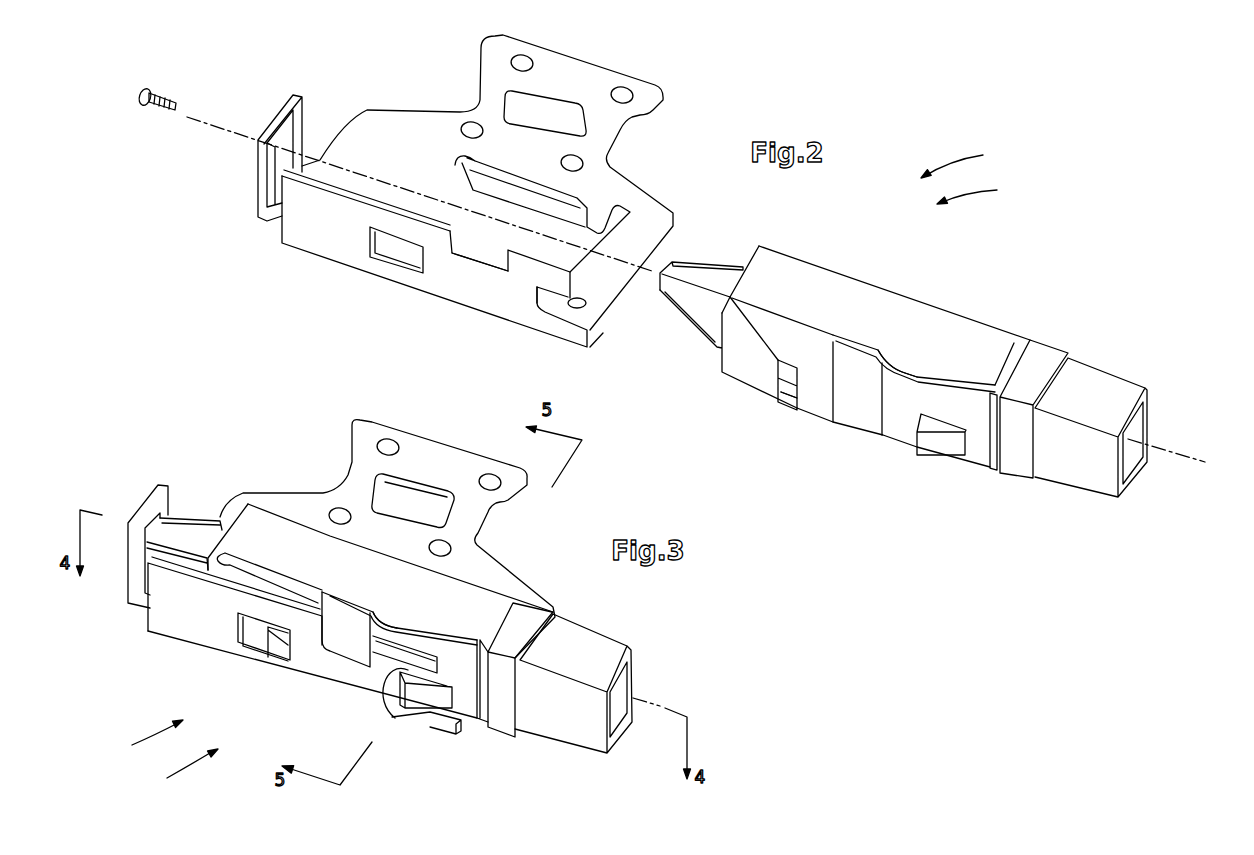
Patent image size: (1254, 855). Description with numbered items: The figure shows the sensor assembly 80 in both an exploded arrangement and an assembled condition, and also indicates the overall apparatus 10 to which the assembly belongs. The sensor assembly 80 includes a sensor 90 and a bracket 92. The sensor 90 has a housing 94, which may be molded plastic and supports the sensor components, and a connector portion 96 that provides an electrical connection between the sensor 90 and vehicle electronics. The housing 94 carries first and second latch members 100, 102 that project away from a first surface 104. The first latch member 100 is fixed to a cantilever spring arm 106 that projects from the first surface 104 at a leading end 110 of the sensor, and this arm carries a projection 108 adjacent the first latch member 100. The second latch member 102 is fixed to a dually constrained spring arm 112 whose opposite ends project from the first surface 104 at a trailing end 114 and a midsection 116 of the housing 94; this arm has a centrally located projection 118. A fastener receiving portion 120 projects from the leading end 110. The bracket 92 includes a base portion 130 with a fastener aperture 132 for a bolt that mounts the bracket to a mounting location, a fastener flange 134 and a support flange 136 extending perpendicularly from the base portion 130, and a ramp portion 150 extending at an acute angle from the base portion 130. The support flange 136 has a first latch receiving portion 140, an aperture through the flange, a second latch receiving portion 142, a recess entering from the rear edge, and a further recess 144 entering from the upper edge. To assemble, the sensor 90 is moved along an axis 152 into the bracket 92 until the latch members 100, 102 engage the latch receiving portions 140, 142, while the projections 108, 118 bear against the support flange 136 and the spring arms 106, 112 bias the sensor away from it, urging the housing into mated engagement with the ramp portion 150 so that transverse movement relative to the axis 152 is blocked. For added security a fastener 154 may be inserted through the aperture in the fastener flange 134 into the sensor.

In FIG. 2, the connector assembly 10 is at (963, 162).
In FIG. 3, the connector assembly 10 is at (179, 768).
In FIG. 2, the sensor assembly 80 is at (980, 192).
In FIG. 3, the sensor assembly 80 is at (144, 737).
In FIG. 2, the sensor 90 is at (930, 320).
In FIG. 3, the sensor 90 is at (472, 596).
In FIG. 2, the bracket 92 is at (383, 142).
In FIG. 3, the bracket 92 is at (307, 507).
In FIG. 2, the housing 94 is at (963, 327).
In FIG. 3, the housing 94 is at (453, 585).
In FIG. 2, the connector portion 96 is at (1078, 463).
In FIG. 3, the connector portion 96 is at (560, 713).
In FIG. 2, the first latch member 100 is at (790, 398).
In FIG. 3, the first latch member 100 is at (283, 650).
In FIG. 2, the second latch member 102 is at (935, 437).
In FIG. 3, the second latch member 102 is at (417, 692).
In FIG. 2, the first surface 104 is at (816, 338).
In FIG. 3, the first surface 104 is at (282, 584).
In FIG. 2, the cantilever spring arm 106 is at (752, 357).
In FIG. 3, the cantilever spring arm 106 is at (237, 570).
In FIG. 2, the projection 108 is at (784, 372).
In FIG. 2, the leading end 110 is at (763, 277).
In FIG. 3, the leading end 110 is at (257, 530).
In FIG. 2, the dually constrained spring arm 112 is at (857, 407).
In FIG. 3, the dually constrained spring arm 112 is at (343, 632).
In FIG. 2, the trailing end 114 is at (1005, 350).
In FIG. 3, the trailing end 114 is at (505, 611).
In FIG. 2, the midsection 116 is at (903, 295).
In FIG. 3, the midsection 116 is at (367, 567).
In FIG. 2, the projection 118 is at (903, 435).
In FIG. 3, the projection 118 is at (392, 625).
In FIG. 2, the fastener receiving portion 120 is at (712, 257).
In FIG. 3, the fastener receiving portion 120 is at (183, 543).
In FIG. 2, the base portion 130 is at (422, 132).
In FIG. 3, the base portion 130 is at (342, 432).
In FIG. 2, the fastener aperture 132 is at (553, 113).
In FIG. 3, the fastener aperture 132 is at (412, 492).
In FIG. 2, the fastener flange 134 is at (284, 112).
In FIG. 3, the fastener flange 134 is at (143, 513).
In FIG. 2, the support flange 136 is at (315, 227).
In FIG. 3, the support flange 136 is at (213, 628).
In FIG. 2, the first latch receiving portion 140 is at (393, 247).
In FIG. 3, the first latch receiving portion 140 is at (257, 642).
In FIG. 2, the second latch receiving portion 142 is at (548, 302).
In FIG. 3, the second latch receiving portion 142 is at (390, 700).
In FIG. 2, the recess 144 is at (477, 257).
In FIG. 3, the recess 144 is at (357, 675).
In FIG. 2, the ramp portion 150 is at (567, 197).
In FIG. 2, the axis 152 is at (1174, 452).
In FIG. 3, the axis 152 is at (652, 700).
In FIG. 2, the fastener 154 is at (153, 98).